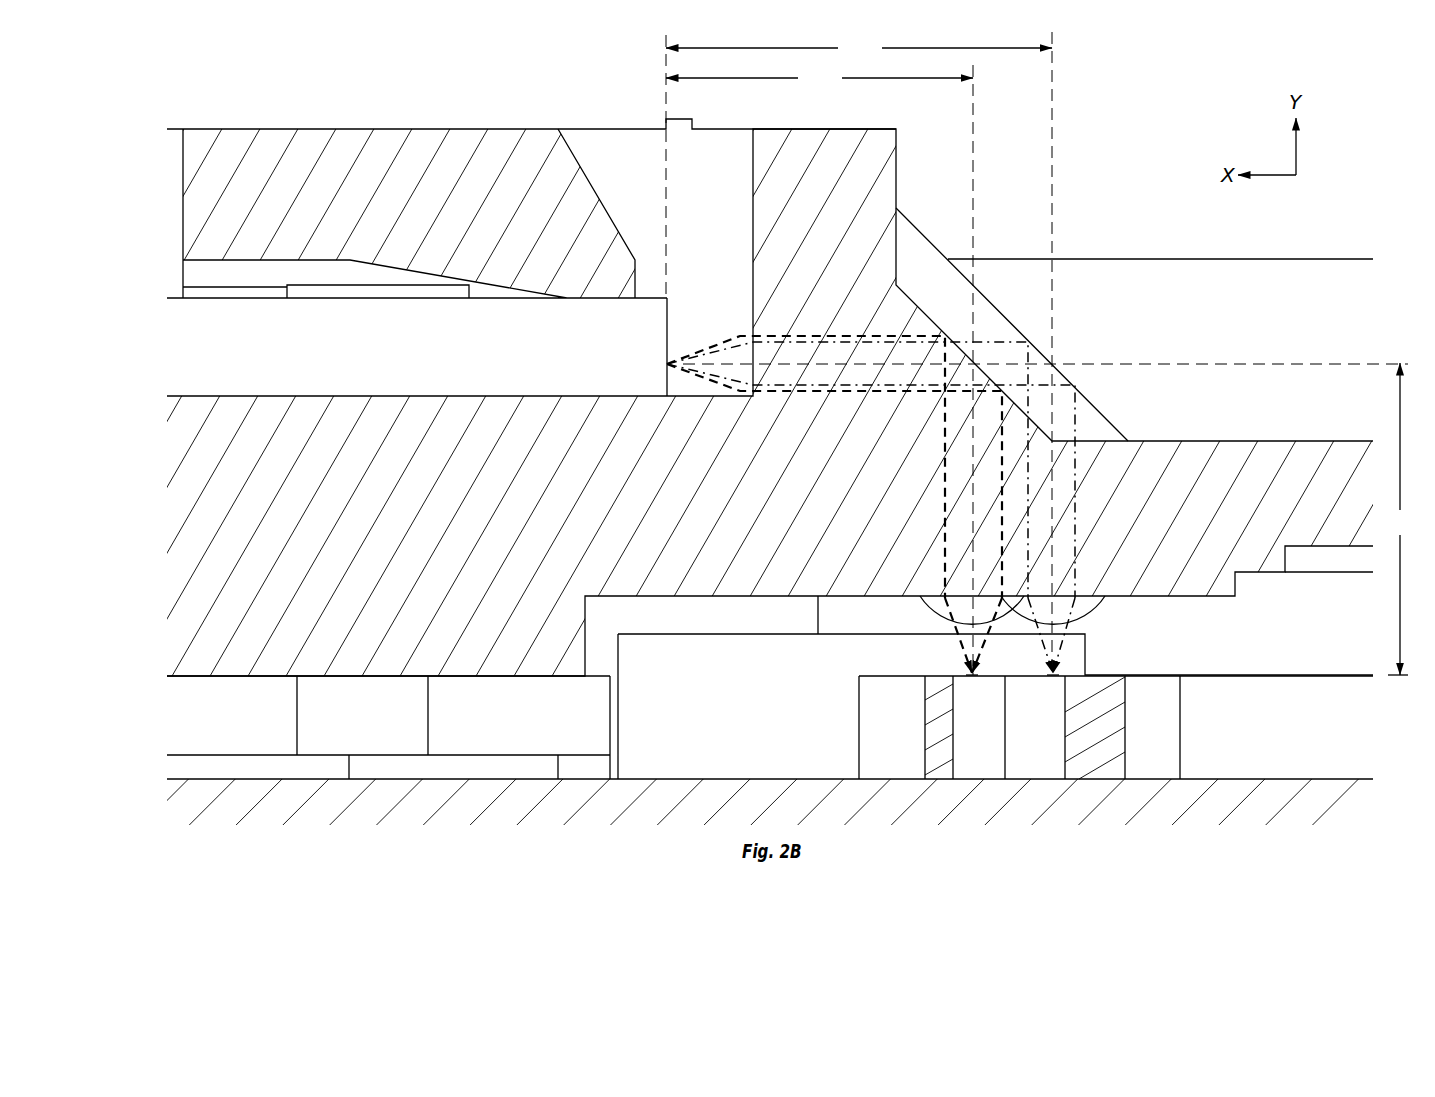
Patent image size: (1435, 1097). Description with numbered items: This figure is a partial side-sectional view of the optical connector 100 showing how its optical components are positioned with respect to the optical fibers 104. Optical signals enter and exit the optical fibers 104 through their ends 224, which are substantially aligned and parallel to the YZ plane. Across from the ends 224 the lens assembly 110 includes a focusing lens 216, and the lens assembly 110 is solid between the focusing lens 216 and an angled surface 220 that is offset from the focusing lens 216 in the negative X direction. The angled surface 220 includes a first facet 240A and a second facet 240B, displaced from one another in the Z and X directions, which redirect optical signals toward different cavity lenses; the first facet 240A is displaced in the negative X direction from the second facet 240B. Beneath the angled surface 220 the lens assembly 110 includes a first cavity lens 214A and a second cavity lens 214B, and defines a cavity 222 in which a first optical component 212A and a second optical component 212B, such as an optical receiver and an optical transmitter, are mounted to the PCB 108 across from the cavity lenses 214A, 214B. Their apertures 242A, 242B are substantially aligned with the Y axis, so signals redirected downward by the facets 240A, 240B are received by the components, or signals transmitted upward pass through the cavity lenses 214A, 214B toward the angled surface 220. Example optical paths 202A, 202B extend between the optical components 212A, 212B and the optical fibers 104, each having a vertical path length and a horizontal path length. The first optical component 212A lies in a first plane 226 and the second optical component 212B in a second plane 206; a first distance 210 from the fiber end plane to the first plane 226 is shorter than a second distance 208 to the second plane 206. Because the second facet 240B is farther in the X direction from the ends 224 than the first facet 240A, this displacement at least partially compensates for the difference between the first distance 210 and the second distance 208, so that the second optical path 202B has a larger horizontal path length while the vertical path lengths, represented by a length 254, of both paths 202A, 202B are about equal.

The connector 100 is at (276, 100).
The optical fibers 104 is at (403, 361).
The PCB 108 is at (950, 812).
The lens assembly 110 is at (717, 400).
The first optical path 202A is at (943, 513).
The second optical path 202B is at (1075, 463).
The second plane 206 is at (1054, 119).
The second distance 208 is at (859, 47).
The first distance 210 is at (819, 77).
The first optical component 212A is at (912, 741).
The second optical component 212B is at (1055, 741).
The first cavity lens 214A is at (935, 603).
The second cavity lens 214B is at (1082, 599).
The focusing lens 216 is at (738, 395).
The angled surface 220 is at (1040, 377).
The cavity 222 is at (760, 741).
The ends 224 is at (678, 303).
The first plane 226 is at (976, 119).
The first facet 240A is at (985, 375).
The second facet 240B is at (1088, 400).
The first aperture 242A is at (967, 672).
The second aperture 242B is at (1060, 672).
The length 254 is at (1400, 519).